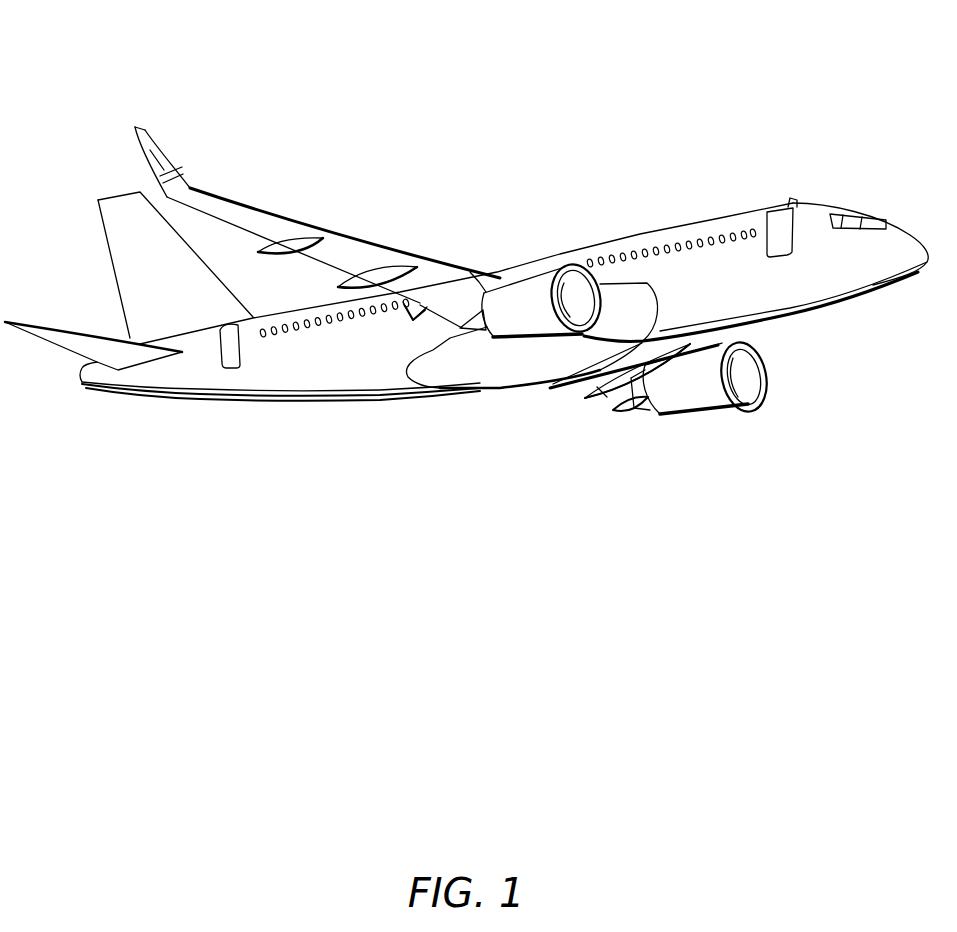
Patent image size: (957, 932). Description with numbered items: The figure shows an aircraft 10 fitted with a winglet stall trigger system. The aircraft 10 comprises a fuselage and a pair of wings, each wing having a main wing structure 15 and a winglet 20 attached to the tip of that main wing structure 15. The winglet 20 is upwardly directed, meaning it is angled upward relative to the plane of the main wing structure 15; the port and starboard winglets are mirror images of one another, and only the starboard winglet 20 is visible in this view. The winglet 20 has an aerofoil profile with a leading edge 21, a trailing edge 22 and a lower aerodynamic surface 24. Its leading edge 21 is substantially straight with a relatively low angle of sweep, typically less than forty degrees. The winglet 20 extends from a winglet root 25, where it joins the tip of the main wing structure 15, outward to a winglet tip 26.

The aircraft 10 is at (466, 212).
The main wing structure 15 is at (353, 237).
The winglet 20 is at (159, 151).
The leading edge 21 is at (157, 142).
The trailing edge 22 is at (146, 143).
The lower aerodynamic surface 24 is at (155, 157).
The winglet root 25 is at (157, 172).
The winglet tip 26 is at (136, 124).